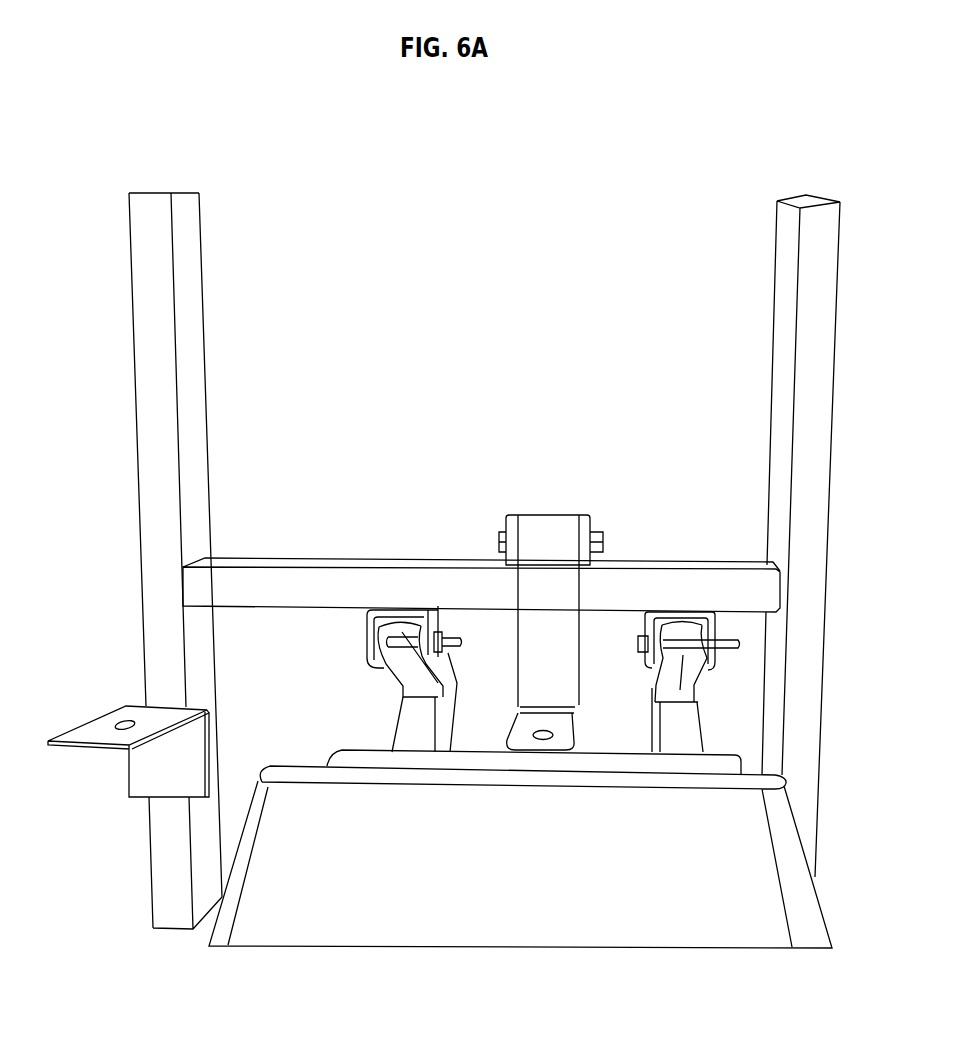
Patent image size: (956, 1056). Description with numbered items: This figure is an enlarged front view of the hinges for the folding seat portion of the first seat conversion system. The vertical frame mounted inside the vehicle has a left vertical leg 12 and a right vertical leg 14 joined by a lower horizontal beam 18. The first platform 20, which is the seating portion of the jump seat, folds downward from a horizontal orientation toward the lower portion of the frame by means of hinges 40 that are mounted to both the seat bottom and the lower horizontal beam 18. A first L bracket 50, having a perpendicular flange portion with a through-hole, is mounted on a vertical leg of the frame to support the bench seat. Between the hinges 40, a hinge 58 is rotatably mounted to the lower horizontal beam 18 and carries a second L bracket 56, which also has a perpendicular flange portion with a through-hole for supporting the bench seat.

The left vertical leg 12 is at (189, 330).
The right vertical leg 14 is at (812, 308).
The lower horizontal beam 18 is at (302, 578).
The first platform 20 is at (559, 923).
The hinges for jump seat 40 is at (348, 660).
The first L bracket to support bench seat 50 is at (158, 768).
The second L bracket to support bench seat 56 is at (555, 610).
The hinge for second L bracket 58 is at (588, 527).